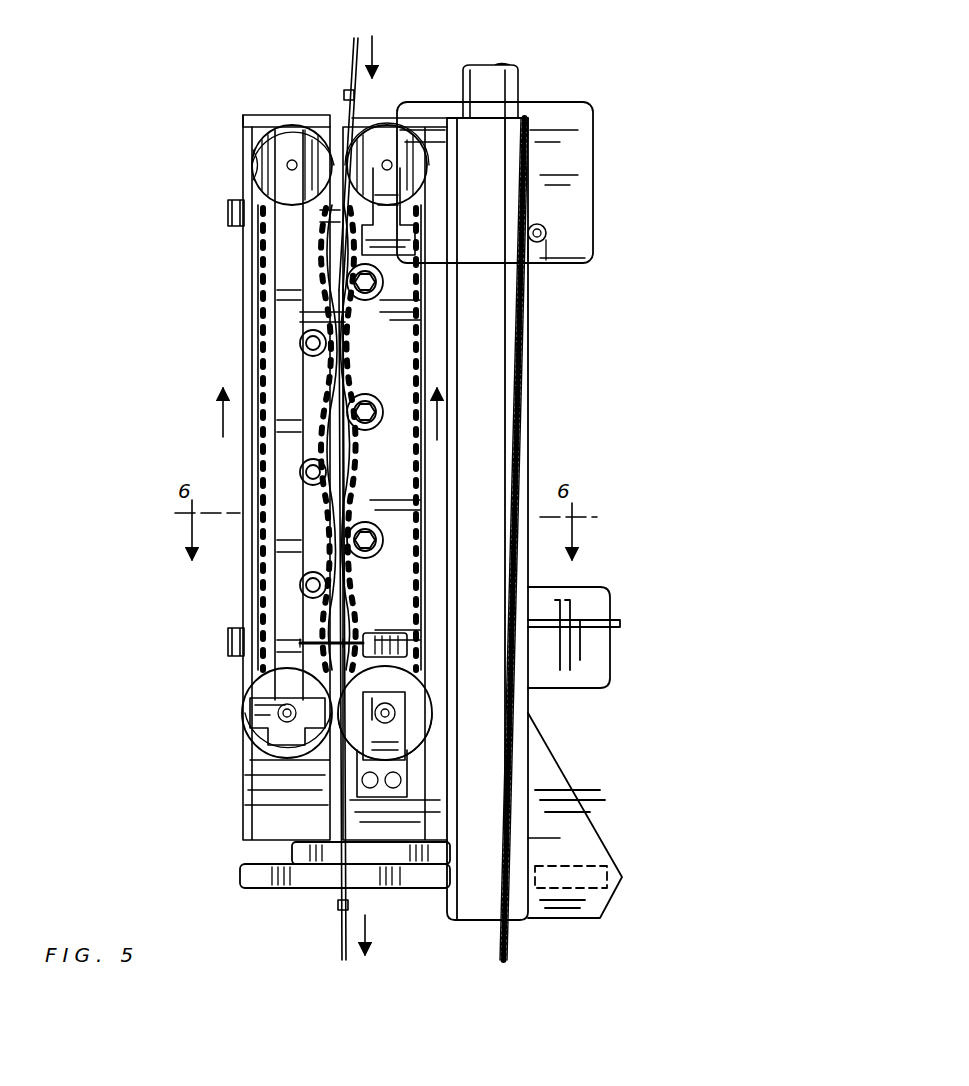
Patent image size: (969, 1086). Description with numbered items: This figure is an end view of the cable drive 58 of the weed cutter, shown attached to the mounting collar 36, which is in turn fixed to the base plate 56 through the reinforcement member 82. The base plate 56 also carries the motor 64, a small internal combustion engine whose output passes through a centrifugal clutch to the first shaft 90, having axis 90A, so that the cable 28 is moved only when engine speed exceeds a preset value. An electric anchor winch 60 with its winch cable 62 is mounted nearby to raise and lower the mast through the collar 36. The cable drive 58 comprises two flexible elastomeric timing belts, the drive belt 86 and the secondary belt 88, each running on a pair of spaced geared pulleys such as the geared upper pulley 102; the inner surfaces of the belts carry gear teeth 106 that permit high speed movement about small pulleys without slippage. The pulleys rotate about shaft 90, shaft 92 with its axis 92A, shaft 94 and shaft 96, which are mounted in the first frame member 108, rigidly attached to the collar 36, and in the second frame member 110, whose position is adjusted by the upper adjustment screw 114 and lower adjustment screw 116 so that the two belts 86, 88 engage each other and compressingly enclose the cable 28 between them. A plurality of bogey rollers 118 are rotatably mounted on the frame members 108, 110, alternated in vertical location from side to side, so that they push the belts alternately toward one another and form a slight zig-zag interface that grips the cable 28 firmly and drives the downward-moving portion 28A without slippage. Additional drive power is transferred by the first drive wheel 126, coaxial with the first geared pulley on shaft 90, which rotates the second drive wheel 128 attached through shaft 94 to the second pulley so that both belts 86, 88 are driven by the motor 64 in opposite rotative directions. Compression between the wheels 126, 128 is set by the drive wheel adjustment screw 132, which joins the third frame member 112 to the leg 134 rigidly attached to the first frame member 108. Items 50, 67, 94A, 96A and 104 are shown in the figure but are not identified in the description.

The cable 28 is at (337, 898).
The cable 28A is at (352, 45).
The mounting collar 36 is at (513, 180).
The wire clip 50 is at (345, 92).
The base plate 56 is at (240, 875).
The cable drive 58 is at (183, 376).
The electric anchor winch 60 is at (572, 228).
The winch cable 62 is at (540, 240).
The motor 64 is at (292, 852).
The direction arrow 67 is at (376, 42).
The reinforcement member 82 is at (590, 853).
The drive belt 86 is at (425, 345).
The secondary belt 88 is at (243, 322).
The first shaft 90 is at (432, 705).
The axis 90A is at (393, 713).
The shaft 92 is at (389, 160).
The axis 92A is at (395, 163).
The shaft 94 is at (300, 745).
The pulley hub 94A is at (286, 714).
The shaft 96 is at (270, 128).
The pulley hub 96A is at (287, 167).
The geared upper pulley 102 is at (398, 128).
The pulley flange 104 is at (252, 160).
The gear teeth 106 is at (258, 292).
The first frame member 108 is at (410, 138).
The second frame member 110 is at (300, 116).
The third frame member 112 is at (290, 568).
The upper adjustment screw 114 is at (228, 212).
The lower adjustment screw 116 is at (228, 643).
The bogey rollers 118 is at (383, 282).
The first drive wheel 126 is at (420, 745).
The second drive wheel 128 is at (280, 712).
The drive wheel adjustment screw 132 is at (300, 645).
The leg 134 is at (400, 640).